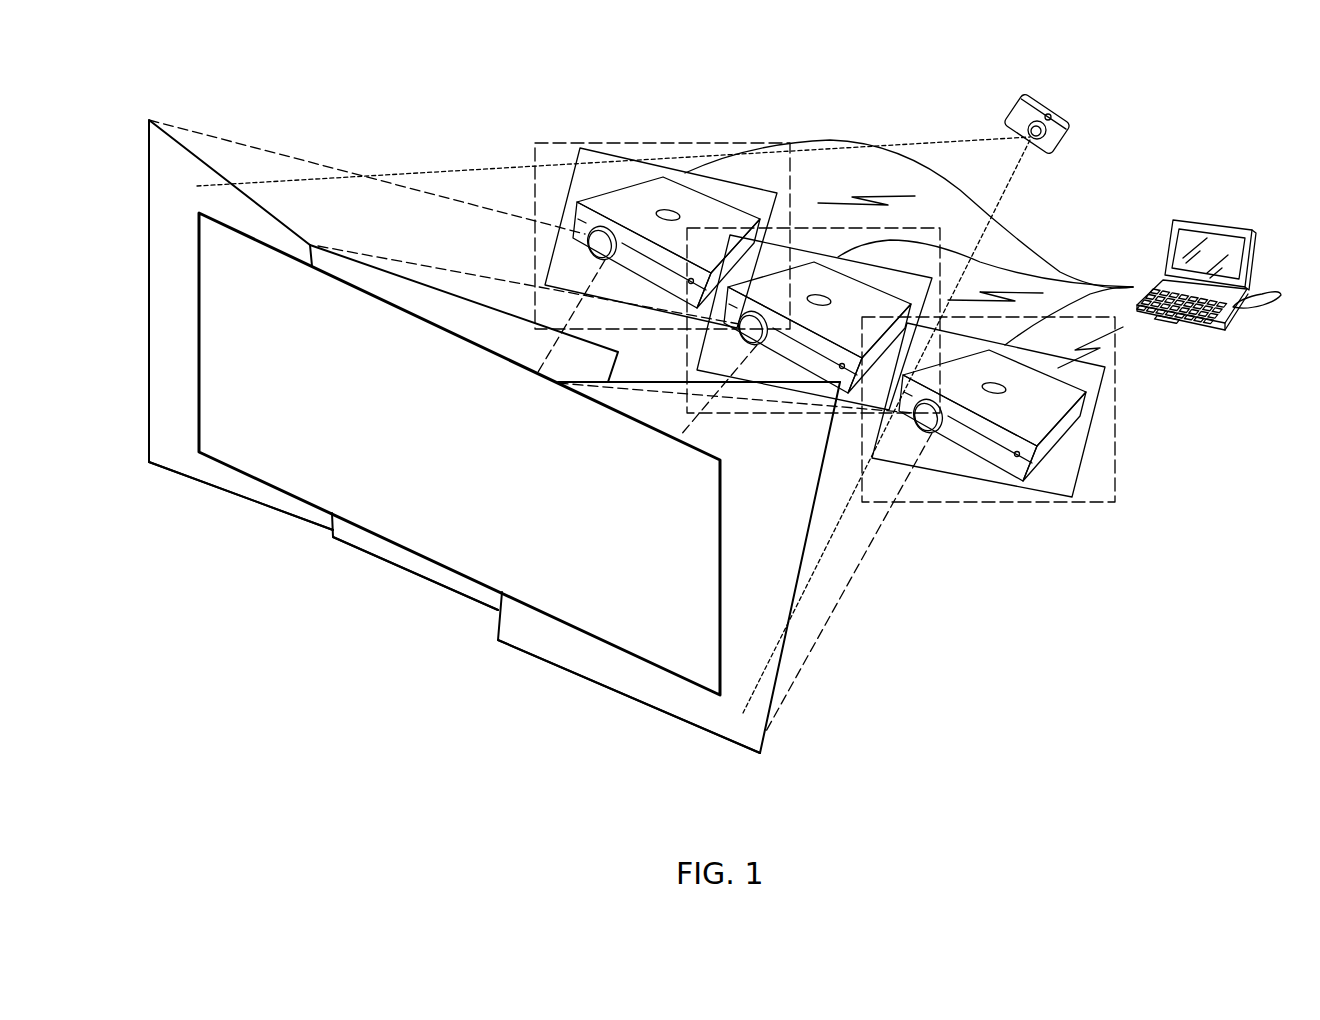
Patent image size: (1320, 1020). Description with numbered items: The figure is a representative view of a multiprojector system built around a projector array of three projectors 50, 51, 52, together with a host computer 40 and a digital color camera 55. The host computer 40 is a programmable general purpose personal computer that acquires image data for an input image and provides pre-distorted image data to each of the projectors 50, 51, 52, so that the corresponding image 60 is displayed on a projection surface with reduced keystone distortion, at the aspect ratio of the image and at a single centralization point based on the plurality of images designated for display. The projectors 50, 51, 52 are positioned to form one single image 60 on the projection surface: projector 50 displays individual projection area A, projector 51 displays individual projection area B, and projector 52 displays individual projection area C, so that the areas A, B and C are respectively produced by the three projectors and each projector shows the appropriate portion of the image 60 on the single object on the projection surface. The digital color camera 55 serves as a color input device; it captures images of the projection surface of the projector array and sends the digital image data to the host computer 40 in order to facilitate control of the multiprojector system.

The host computer 40 is at (1253, 244).
The projector 50 is at (1036, 420).
The projector 51 is at (852, 330).
The projector 52 is at (644, 215).
The digital color camera 55 is at (1013, 105).
The image 60 is at (223, 435).
The individual projection area A is at (610, 667).
The individual projection area B is at (405, 558).
The individual projection area C is at (163, 453).